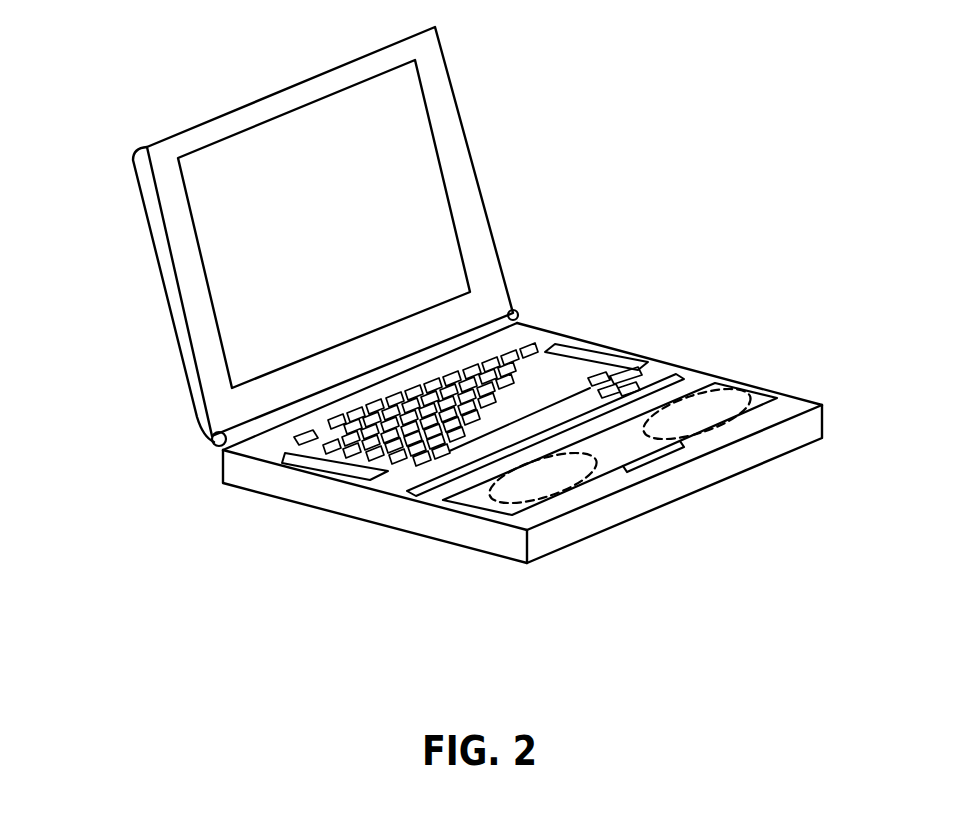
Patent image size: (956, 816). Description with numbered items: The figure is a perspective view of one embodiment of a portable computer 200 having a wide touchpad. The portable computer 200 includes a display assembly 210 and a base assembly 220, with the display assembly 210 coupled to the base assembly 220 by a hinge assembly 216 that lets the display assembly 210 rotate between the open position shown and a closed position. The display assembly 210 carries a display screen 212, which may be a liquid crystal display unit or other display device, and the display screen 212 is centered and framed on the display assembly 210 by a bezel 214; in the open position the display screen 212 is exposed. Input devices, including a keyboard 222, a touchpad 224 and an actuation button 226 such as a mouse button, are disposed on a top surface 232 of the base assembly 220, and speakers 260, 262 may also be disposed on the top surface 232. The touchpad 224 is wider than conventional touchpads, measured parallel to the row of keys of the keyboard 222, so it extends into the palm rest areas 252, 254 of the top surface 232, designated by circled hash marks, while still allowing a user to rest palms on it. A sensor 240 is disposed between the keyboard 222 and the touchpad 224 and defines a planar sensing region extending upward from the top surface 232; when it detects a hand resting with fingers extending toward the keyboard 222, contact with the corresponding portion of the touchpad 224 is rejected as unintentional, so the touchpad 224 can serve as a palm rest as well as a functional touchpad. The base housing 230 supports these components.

The portable computer 200 is at (186, 72).
The display assembly 210 is at (141, 236).
The display screen 212 is at (341, 216).
The bezel 214 is at (443, 113).
The hinge assembly 216 is at (513, 310).
The base assembly 220 is at (250, 537).
The keyboard 222 is at (507, 345).
The touchpad 224 is at (752, 397).
The actuation button 226 is at (687, 450).
The base housing 230 is at (460, 523).
The top surface 232 is at (272, 445).
The sensor 240 is at (682, 372).
The palm rest area 252 is at (752, 417).
The palm rest area 254 is at (587, 492).
The speaker 260 is at (343, 470).
The speaker 262 is at (598, 356).